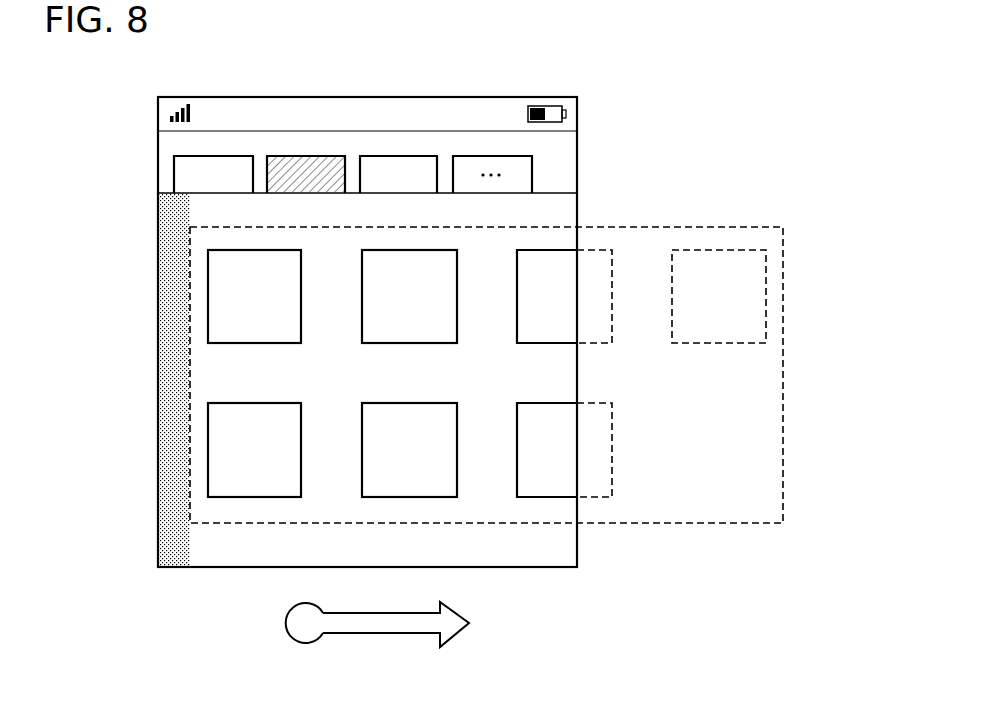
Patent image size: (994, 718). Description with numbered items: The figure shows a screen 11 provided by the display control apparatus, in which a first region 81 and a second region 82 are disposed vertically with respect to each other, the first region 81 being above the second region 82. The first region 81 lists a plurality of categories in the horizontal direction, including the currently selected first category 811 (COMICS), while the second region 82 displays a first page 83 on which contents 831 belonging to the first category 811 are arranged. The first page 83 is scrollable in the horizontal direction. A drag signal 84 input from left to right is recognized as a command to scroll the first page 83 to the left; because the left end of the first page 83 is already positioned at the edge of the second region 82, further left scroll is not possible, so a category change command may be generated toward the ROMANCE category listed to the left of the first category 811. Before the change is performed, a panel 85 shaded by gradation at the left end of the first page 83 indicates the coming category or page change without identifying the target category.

The screen 11 is at (370, 97).
The first region 81 is at (397, 121).
The first category 811 is at (305, 162).
The second region 82 is at (570, 205).
The first page 83 is at (516, 362).
The contents 831 is at (768, 297).
The drag signal 84 is at (375, 615).
The panel 85 is at (158, 387).